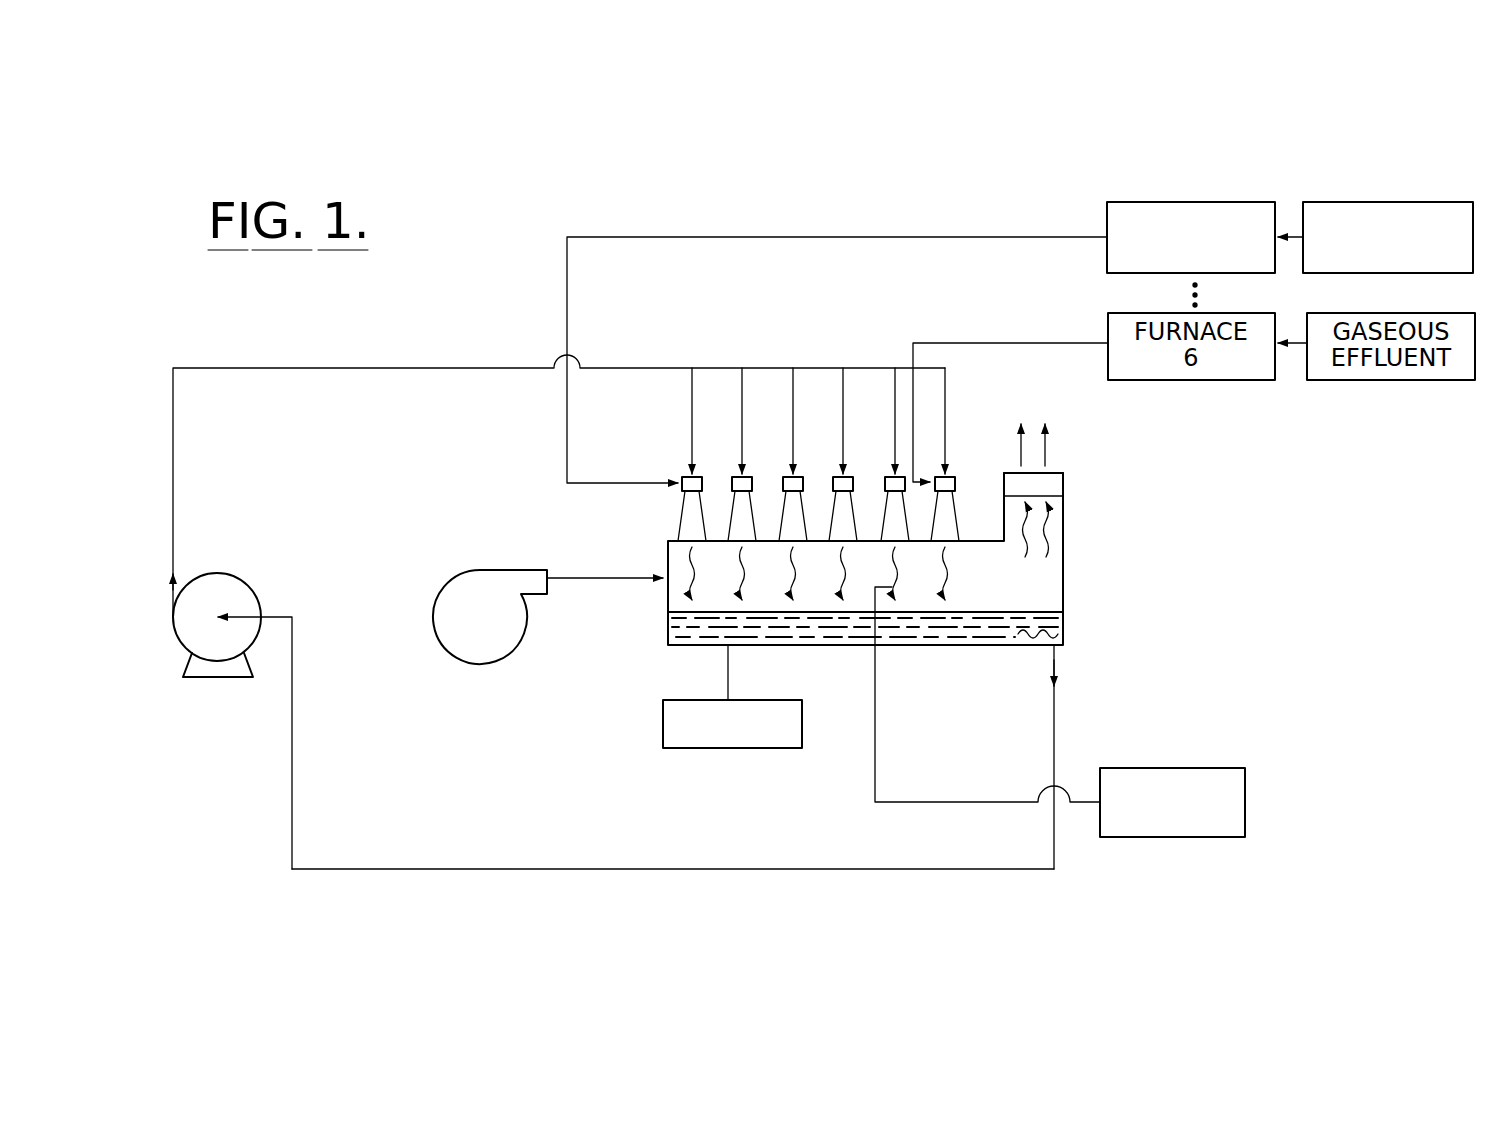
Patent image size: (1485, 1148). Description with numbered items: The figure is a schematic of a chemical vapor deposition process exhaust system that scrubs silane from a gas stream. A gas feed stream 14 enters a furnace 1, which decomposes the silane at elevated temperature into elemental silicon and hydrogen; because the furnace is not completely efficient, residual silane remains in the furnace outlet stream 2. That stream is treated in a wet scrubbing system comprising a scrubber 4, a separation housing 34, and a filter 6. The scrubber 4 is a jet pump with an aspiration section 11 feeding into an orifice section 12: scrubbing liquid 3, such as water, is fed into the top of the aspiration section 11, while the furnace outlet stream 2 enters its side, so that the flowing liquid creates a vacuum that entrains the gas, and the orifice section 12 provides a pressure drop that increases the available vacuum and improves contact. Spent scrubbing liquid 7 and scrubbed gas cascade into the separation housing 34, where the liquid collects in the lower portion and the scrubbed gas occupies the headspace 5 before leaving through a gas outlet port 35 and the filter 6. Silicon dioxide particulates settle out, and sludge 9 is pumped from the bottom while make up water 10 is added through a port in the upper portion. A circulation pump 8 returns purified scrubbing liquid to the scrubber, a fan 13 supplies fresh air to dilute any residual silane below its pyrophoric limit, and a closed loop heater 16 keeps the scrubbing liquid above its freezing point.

The furnace 1 is at (1232, 200).
The furnace outlet stream 2 is at (1067, 235).
The scrubbing liquid 3 is at (504, 368).
The scrubber 4 is at (598, 512).
The headspace 5 is at (987, 583).
The filter 6 is at (1063, 479).
The spent scrubbing liquid 7 is at (690, 625).
The circulation pump 8 is at (225, 582).
The sludge 9 is at (730, 679).
The make up water 10 is at (1170, 768).
The aspiration section 11 is at (688, 483).
The orifice section 12 is at (690, 518).
The fan 13 is at (466, 581).
The gas feed stream 14 is at (1295, 235).
The closed loop heater 16 is at (1063, 636).
The separation housing 34 is at (1079, 537).
The gas outlet port 35 is at (1063, 510).